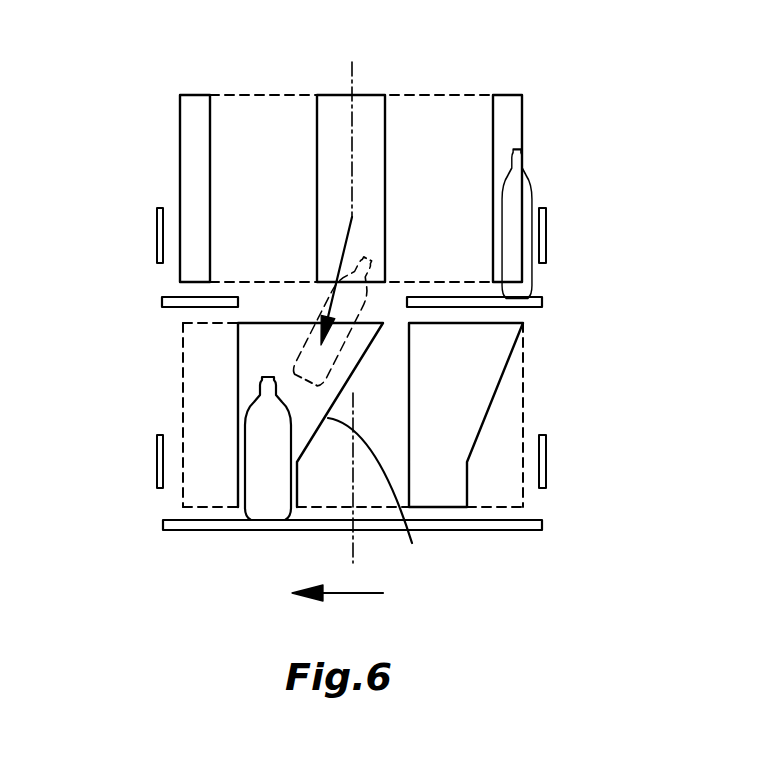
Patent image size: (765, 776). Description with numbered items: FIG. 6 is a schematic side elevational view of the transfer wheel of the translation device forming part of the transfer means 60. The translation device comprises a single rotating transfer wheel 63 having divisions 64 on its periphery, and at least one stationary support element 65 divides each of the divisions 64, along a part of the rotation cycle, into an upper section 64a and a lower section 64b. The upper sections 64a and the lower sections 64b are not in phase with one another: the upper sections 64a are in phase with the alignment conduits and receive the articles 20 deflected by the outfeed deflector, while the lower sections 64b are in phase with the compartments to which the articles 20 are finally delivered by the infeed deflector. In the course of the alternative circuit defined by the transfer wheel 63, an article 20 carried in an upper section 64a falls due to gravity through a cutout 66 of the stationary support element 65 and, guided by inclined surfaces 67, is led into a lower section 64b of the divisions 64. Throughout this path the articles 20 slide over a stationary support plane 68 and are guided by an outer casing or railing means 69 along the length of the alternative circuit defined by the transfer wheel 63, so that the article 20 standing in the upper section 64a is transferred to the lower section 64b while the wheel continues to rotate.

The transfer means 60 is at (124, 170).
The transfer wheel 63 is at (408, 100).
The divisions 64 is at (302, 172).
The upper section 64a is at (377, 195).
The lower section 64b is at (250, 350).
The stationary support element 65 is at (467, 297).
The cutout 66 is at (280, 302).
The inclined surfaces 67 is at (394, 507).
The stationary support plane 68 is at (502, 530).
The railing means 69 is at (546, 233).
The articles 20 is at (528, 202).